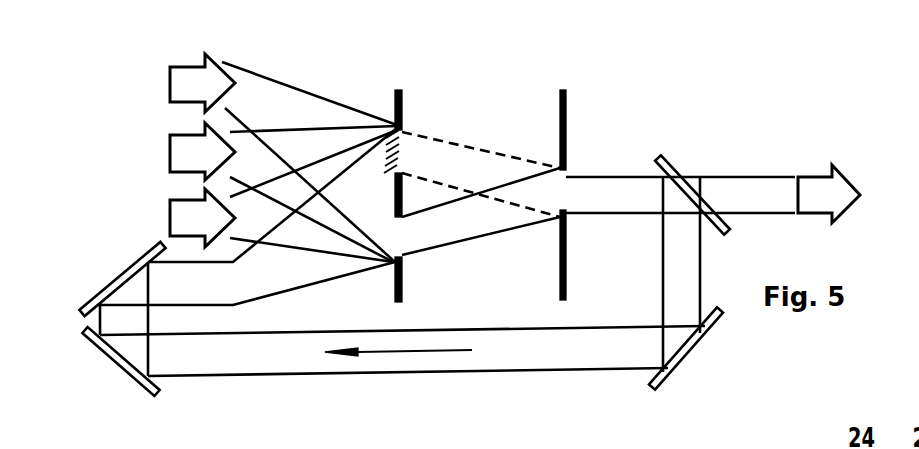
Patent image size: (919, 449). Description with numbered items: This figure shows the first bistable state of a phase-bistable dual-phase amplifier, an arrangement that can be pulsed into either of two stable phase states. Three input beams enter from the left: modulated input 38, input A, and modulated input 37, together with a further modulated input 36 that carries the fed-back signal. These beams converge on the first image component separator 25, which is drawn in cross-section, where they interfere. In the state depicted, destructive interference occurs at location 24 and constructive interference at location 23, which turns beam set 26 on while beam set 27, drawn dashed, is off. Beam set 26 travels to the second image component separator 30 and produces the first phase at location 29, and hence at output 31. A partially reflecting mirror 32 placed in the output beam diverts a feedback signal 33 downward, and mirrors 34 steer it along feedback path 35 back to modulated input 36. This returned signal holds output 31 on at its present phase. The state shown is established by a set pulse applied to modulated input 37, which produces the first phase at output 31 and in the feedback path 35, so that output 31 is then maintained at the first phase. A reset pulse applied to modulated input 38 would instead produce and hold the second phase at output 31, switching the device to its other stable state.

The location 23 is at (409, 237).
The location 24 is at (378, 151).
The image component separator 25 is at (412, 105).
The beam set 26 is at (481, 214).
The beam set 27 is at (481, 174).
The location 29 is at (550, 188).
The image component separator 30 is at (553, 121).
The output 31 is at (848, 194).
The partially reflecting mirror 32 is at (704, 181).
The feedback signal 33 is at (681, 274).
The mirrors 34 is at (700, 365).
The feedback path 35 is at (402, 351).
The modulated input 36 is at (248, 252).
The modulated input 37 is at (183, 218).
The modulated input 38 is at (183, 83).
The input beam A is at (189, 151).